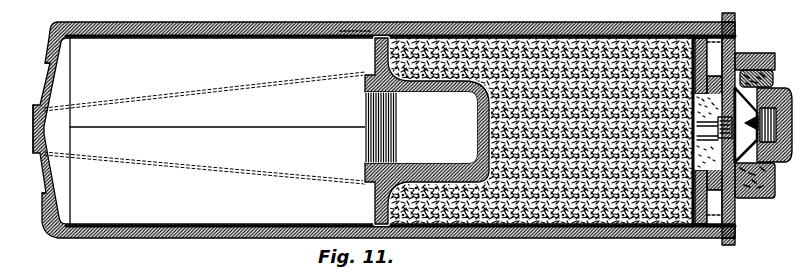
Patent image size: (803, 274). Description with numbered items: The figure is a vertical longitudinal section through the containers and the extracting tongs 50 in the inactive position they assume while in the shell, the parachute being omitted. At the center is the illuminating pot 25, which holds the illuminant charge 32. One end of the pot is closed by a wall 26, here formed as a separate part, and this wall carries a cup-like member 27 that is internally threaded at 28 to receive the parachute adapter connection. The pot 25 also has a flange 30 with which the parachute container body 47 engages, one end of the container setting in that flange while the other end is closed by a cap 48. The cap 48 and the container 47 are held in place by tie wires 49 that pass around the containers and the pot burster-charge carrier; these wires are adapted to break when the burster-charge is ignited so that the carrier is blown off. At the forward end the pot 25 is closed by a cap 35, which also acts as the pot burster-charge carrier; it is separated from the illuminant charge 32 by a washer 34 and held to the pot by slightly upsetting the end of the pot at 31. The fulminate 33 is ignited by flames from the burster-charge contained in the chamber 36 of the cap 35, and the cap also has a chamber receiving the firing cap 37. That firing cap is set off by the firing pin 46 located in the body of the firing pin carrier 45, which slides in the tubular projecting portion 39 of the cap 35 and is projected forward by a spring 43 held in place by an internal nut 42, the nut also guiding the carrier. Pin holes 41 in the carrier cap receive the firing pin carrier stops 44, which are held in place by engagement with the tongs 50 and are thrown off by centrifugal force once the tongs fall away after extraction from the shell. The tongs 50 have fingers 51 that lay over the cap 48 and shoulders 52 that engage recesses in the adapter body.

The illuminating pot 25 is at (498, 33).
The wall 26 is at (376, 56).
The cup-like member 27 is at (415, 151).
The internal threads 28 is at (372, 118).
The flange 30 is at (348, 30).
The upset end of the pot 31 is at (694, 36).
The illuminant charge 32 is at (556, 40).
The fulminate 33 is at (696, 130).
The washer 34 is at (697, 142).
The cap (pot burster-charge carrier) 35 is at (699, 165).
The chamber 36 is at (712, 100).
The firing cap 37 is at (700, 108).
The tubular projecting portion 39 is at (737, 214).
The pin holes 41 is at (735, 55).
The internal nut 42 is at (773, 77).
The spring 43 is at (770, 64).
The firing pin carrier stops 44 is at (716, 36).
The firing pin carrier 45 is at (773, 186).
The firing pin 46 is at (790, 150).
The parachute container body 47 is at (135, 22).
The cap 48 is at (42, 84).
The tie wires 49 is at (160, 94).
The tongs 50 is at (268, 16).
The fingers 51 is at (52, 48).
The shoulders 52 is at (735, 18).